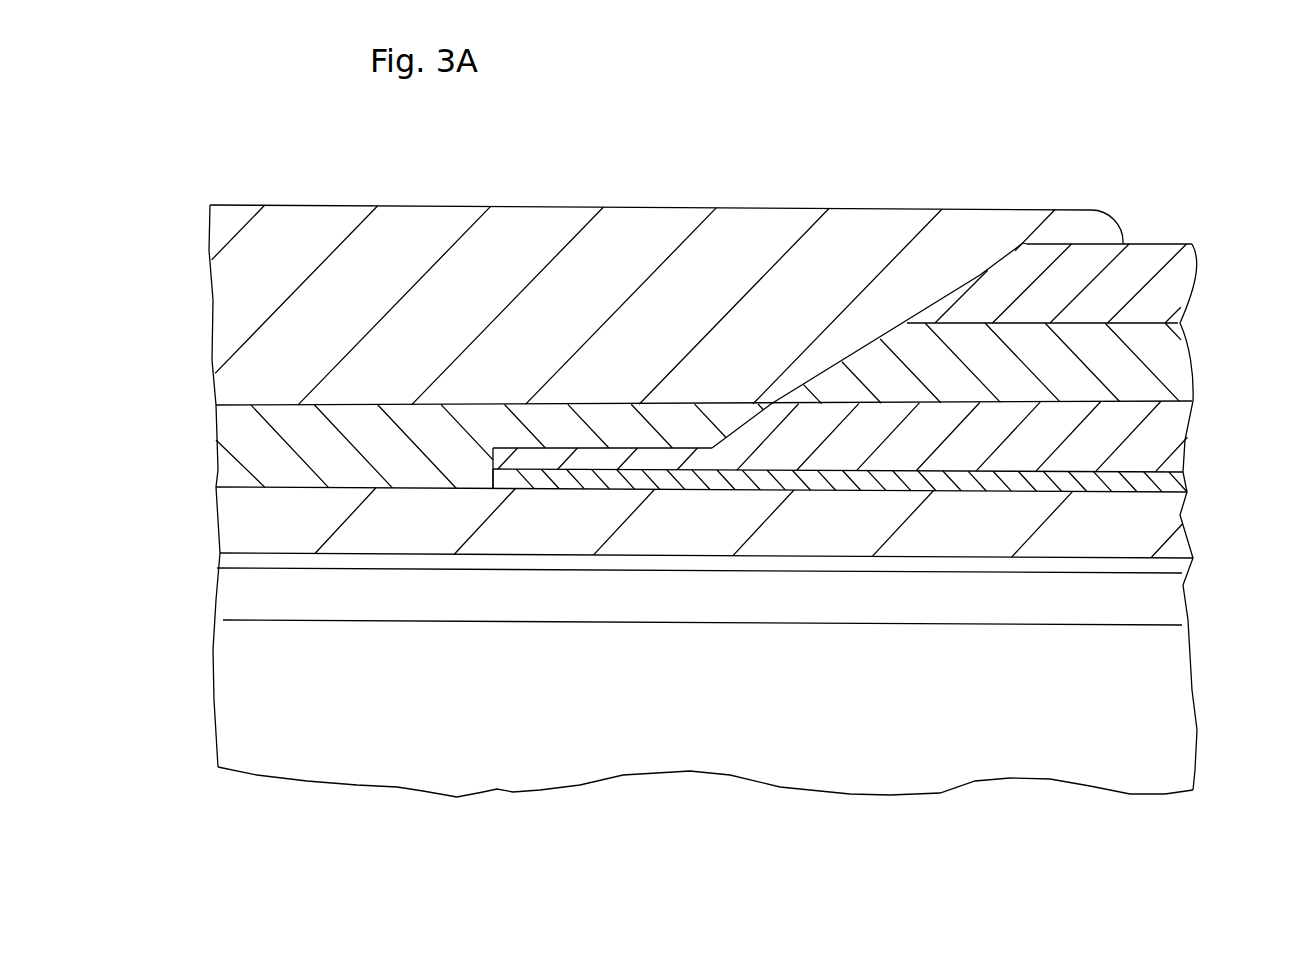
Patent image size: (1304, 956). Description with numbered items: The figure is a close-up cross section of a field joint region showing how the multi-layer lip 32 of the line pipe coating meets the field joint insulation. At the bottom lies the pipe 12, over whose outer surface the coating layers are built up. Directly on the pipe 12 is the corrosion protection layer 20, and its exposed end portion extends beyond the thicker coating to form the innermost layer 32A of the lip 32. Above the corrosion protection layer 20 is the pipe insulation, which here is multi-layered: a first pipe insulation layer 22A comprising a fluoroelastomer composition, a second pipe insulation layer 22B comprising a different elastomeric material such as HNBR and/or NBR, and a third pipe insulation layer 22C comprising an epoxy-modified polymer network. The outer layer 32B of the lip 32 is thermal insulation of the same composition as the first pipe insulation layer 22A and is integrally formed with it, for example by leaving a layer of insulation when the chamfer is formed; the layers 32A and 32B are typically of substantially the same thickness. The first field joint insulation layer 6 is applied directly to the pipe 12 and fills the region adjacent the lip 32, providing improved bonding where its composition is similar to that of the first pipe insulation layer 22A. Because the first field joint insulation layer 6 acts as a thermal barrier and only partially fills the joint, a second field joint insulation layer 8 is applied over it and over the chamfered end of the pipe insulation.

The second field joint insulation layer 8 is at (230, 305).
The first field joint insulation layer 6 is at (225, 455).
The pipe 12 is at (227, 532).
The lip 32 is at (557, 447).
The innermost layer 32A is at (493, 479).
The outer layer 32B is at (493, 458).
The first pipe insulation layer 22A is at (1178, 436).
The second pipe insulation layer 22B is at (1177, 369).
The third pipe insulation layer 22C is at (1176, 289).
The corrosion protection layer 20 is at (1187, 482).